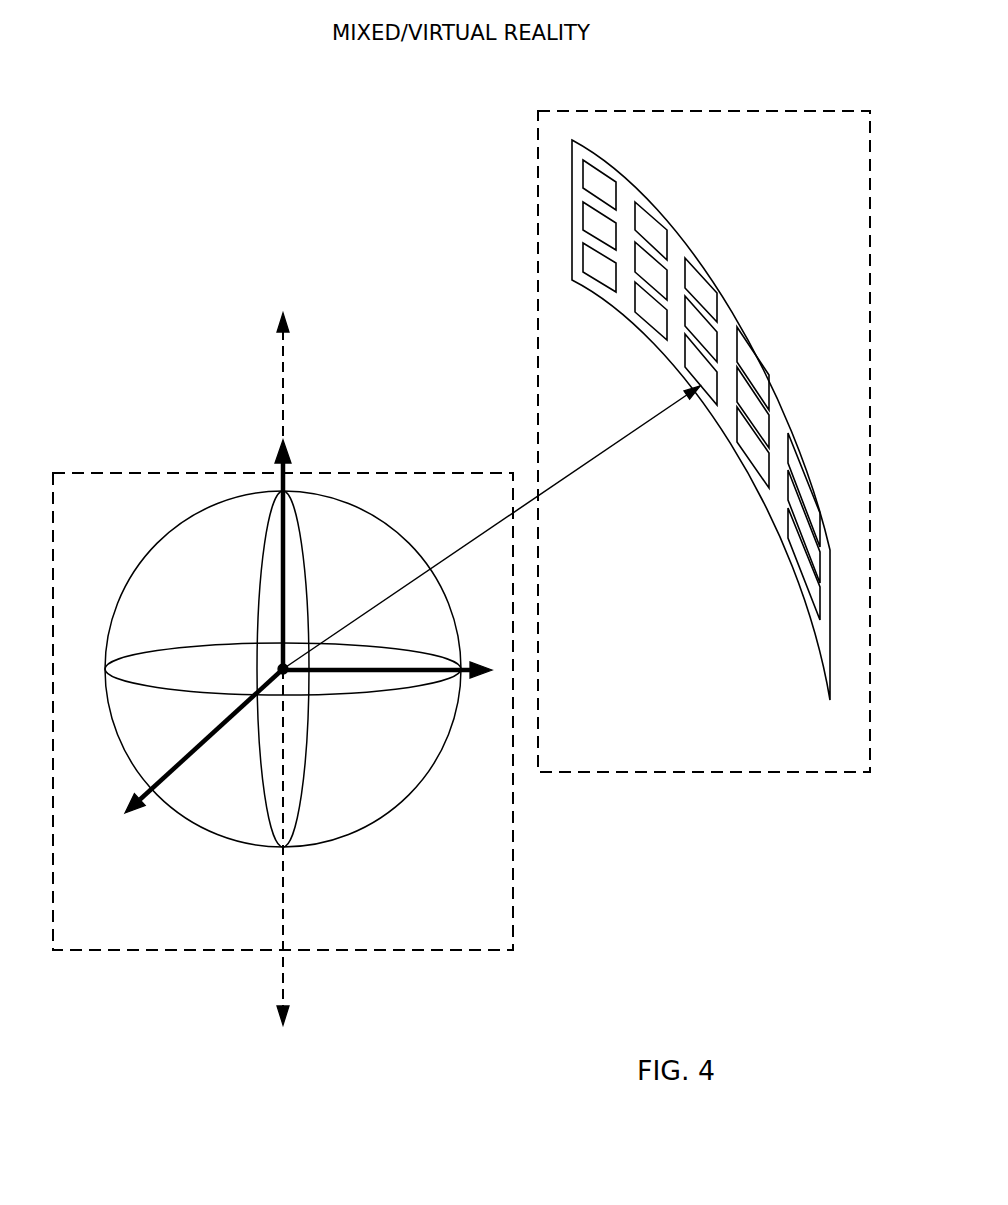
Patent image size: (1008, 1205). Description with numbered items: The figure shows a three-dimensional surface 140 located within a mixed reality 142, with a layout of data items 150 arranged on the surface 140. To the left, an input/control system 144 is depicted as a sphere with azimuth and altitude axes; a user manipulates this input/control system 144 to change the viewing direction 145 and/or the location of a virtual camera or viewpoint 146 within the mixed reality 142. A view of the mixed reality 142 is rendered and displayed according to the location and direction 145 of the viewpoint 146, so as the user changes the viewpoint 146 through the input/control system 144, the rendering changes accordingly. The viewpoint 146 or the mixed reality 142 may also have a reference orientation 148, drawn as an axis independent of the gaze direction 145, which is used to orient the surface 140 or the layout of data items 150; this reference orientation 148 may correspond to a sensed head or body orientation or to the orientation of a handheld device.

The 3D surface 140 is at (716, 90).
The mixed reality 142 is at (471, 135).
The input/control system 144 is at (140, 391).
The viewing direction 145 is at (435, 305).
The viewpoint 146 is at (433, 990).
The reference orientation 148 is at (232, 280).
The data items 150 is at (508, 221).